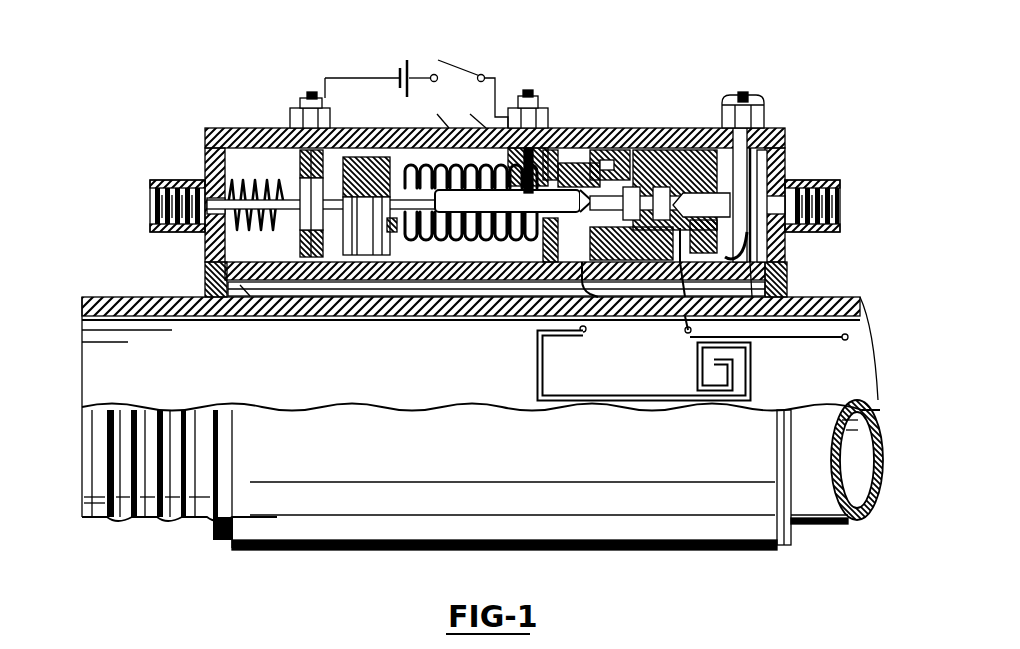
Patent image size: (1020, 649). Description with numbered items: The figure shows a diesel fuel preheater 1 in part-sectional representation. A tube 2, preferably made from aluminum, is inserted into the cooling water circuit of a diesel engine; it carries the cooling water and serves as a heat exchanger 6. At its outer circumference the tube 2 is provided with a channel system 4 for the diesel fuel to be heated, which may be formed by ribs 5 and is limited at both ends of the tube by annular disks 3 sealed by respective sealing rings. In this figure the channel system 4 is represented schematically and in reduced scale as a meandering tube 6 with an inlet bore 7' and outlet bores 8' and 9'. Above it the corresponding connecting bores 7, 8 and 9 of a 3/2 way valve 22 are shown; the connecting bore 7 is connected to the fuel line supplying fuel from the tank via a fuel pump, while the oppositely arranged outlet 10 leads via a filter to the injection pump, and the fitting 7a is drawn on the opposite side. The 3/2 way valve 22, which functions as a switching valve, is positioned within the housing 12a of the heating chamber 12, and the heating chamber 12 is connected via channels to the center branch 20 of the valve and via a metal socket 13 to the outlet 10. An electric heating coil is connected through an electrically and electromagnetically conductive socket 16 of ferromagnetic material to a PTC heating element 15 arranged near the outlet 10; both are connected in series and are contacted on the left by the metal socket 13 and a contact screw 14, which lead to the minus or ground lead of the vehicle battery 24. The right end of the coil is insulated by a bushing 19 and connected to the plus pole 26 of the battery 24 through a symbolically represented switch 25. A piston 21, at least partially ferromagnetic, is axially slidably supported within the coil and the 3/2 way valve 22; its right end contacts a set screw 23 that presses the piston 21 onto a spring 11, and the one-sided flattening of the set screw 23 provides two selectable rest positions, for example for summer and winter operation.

The diesel fuel preheater 1 is at (203, 531).
The tube 2 is at (137, 300).
The annular disks 3 is at (205, 278).
The channel system 4 is at (240, 285).
The ribs 5 is at (346, 282).
The heat exchanger 6 is at (537, 355).
The connecting bore 7 is at (759, 314).
The inlet bore 7' is at (771, 365).
The threaded fitting 7a is at (843, 205).
The connecting bore 8 is at (670, 292).
The outlet bore 8' is at (718, 396).
The connecting bore 9 is at (606, 309).
The outlet bore 9' is at (515, 349).
The outlet 10 is at (150, 210).
The spring 11 is at (205, 185).
The heating chamber 12 is at (248, 167).
The housing 12a is at (240, 128).
The metal socket 13 is at (285, 140).
The contact screw 14 is at (308, 100).
The PTC heating element 15 is at (358, 185).
The socket 16 is at (381, 178).
The bushing 19 is at (540, 172).
The center branch 20 is at (592, 163).
The piston 21 is at (651, 190).
The 3/2 way valve 22 is at (703, 130).
The set screw 23 is at (768, 120).
The vehicle battery 24 is at (377, 64).
The switch 25 is at (468, 79).
The plus pole 26 is at (529, 112).